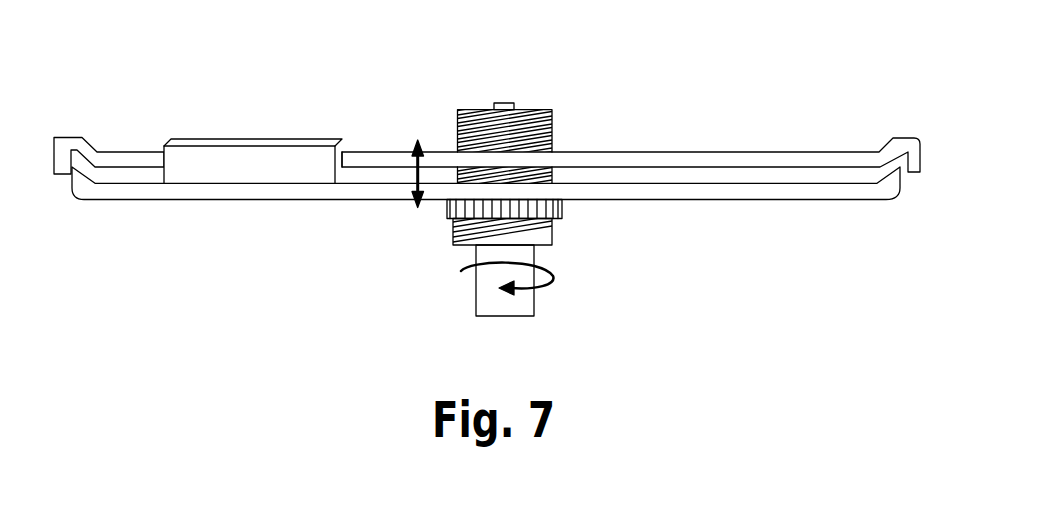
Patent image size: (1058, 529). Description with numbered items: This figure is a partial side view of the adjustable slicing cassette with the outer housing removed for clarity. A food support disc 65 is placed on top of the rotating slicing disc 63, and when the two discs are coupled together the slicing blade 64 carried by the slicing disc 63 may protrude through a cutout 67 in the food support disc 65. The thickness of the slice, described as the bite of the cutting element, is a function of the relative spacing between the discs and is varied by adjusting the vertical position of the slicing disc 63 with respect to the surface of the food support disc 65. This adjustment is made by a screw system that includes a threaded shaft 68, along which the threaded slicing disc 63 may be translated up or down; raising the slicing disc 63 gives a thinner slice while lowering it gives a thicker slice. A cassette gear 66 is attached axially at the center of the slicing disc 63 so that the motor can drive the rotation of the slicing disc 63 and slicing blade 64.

The slicing disc 63 is at (765, 192).
The slicing blade 64 is at (223, 158).
The food support disc 65 is at (753, 158).
The cassette gear 66 is at (450, 213).
The cutout 67 is at (330, 160).
The threaded shaft 68 is at (553, 127).